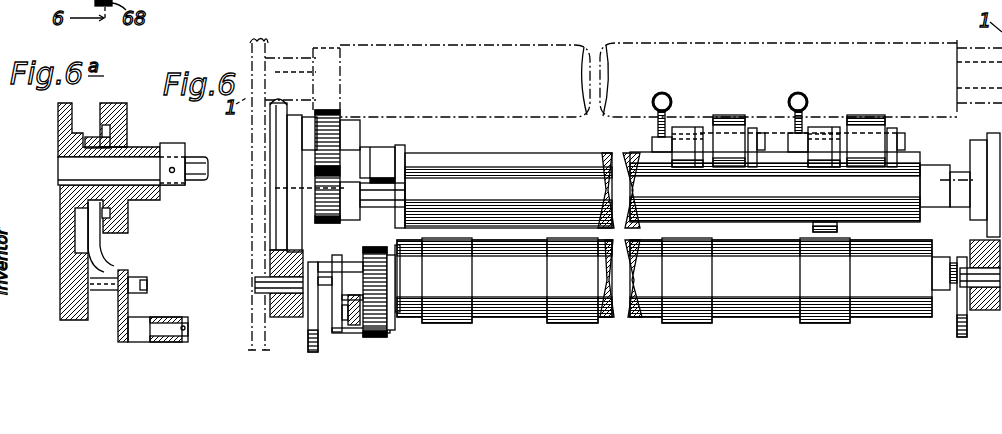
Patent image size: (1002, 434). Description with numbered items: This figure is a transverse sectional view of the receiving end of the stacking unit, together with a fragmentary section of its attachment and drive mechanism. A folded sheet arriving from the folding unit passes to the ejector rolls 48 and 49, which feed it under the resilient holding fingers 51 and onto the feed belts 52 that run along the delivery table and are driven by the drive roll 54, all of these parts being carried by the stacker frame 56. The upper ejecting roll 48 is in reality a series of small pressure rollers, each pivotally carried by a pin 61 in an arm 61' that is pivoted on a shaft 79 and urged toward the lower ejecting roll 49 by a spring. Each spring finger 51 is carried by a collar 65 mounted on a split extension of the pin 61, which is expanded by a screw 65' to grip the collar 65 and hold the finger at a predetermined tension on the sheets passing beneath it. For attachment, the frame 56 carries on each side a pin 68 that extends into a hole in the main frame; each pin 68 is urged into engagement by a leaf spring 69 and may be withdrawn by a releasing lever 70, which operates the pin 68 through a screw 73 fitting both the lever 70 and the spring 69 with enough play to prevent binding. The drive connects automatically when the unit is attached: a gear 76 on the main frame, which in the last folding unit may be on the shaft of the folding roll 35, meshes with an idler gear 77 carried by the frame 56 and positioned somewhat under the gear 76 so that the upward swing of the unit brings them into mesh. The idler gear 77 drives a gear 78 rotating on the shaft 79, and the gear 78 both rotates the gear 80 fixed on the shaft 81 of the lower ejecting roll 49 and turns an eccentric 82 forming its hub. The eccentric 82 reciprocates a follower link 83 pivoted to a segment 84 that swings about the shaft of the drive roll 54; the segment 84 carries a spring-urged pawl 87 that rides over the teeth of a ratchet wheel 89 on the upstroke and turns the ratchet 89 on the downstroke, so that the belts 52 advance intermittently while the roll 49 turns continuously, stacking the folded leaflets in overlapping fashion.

In FIG. 6, the folding roll 35 is at (523, 44).
In FIG. 6, the upper ejecting roll 48 is at (728, 115).
In FIG. 6, the lower ejecting roll 49 is at (465, 177).
In FIG. 6, the resilient holding fingers 51 is at (812, 232).
In FIG. 6, the feed belts 52 is at (548, 325).
In FIG. 6, the drive roll 54 is at (612, 322).
In FIG. 6A, the stacker frame 56 is at (60, 243).
In FIG. 6, the stacker frame 56 is at (270, 250).
In FIG. 6, the pin 61 is at (756, 134).
In FIG. 6, the arm 61' is at (832, 115).
In FIG. 6, the collar 65 is at (756, 119).
In FIG. 6, the screw 65' is at (735, 93).
In FIG. 6, the pin 68 is at (258, 278).
In FIG. 6, the leaf spring 69 is at (960, 295).
In FIG. 6, the releasing lever 70 is at (312, 322).
In FIG. 6, the screw 73 is at (310, 345).
In FIG. 6, the gear 76 is at (327, 48).
In FIG. 6, the idler gear 77 is at (338, 114).
In FIG. 6A, the gear 78 is at (128, 231).
In FIG. 6A, the shaft 79 is at (205, 173).
In FIG. 6, the shaft 79 is at (525, 160).
In FIG. 6, the gear 80 is at (333, 200).
In FIG. 6, the shaft 81 is at (395, 200).
In FIG. 6A, the eccentric 82 is at (58, 167).
In FIG. 6A, the follower link 83 is at (97, 244).
In FIG. 6, the follower link 83 is at (313, 242).
In FIG. 6A, the segment 84 is at (118, 313).
In FIG. 6, the segment 84 is at (336, 332).
In FIG. 6A, the pawl 87 is at (172, 317).
In FIG. 6, the pawl 87 is at (372, 327).
In FIG. 6, the ratchet wheel 89 is at (377, 255).